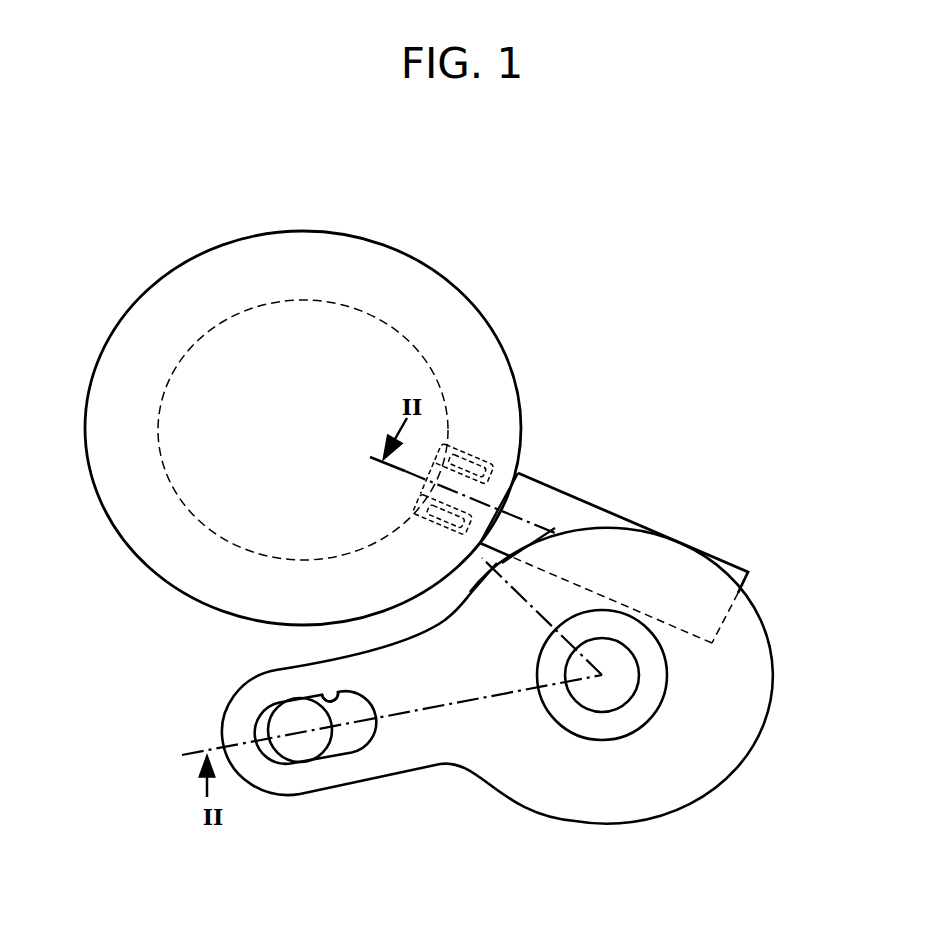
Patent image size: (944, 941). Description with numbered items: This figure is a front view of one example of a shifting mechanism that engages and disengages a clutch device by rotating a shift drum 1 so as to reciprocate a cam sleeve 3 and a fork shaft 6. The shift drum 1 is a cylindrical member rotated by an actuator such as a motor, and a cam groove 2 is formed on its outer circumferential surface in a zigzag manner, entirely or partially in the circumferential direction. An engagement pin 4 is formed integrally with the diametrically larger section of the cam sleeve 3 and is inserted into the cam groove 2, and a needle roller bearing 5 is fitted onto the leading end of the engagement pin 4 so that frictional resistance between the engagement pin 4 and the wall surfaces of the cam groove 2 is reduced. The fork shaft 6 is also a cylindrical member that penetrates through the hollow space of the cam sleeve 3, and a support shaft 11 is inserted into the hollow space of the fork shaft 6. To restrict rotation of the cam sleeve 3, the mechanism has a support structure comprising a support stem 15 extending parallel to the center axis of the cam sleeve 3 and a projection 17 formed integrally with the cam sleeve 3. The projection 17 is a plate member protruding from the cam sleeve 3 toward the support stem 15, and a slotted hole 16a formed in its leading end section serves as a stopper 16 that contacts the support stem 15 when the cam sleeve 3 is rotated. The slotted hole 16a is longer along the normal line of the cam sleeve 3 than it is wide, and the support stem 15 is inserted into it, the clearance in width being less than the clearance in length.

The shift drum 1 is at (388, 247).
The cam groove 2 is at (237, 313).
The cam sleeve 3 is at (768, 651).
The engagement pin 4 is at (568, 505).
The needle roller bearing 5 is at (485, 454).
The fork shaft 6 is at (665, 700).
The support shaft 11 is at (605, 697).
The support stem 15 is at (266, 722).
The stopper 16 is at (333, 752).
The slotted hole 16a is at (326, 697).
The projection 17 is at (387, 768).